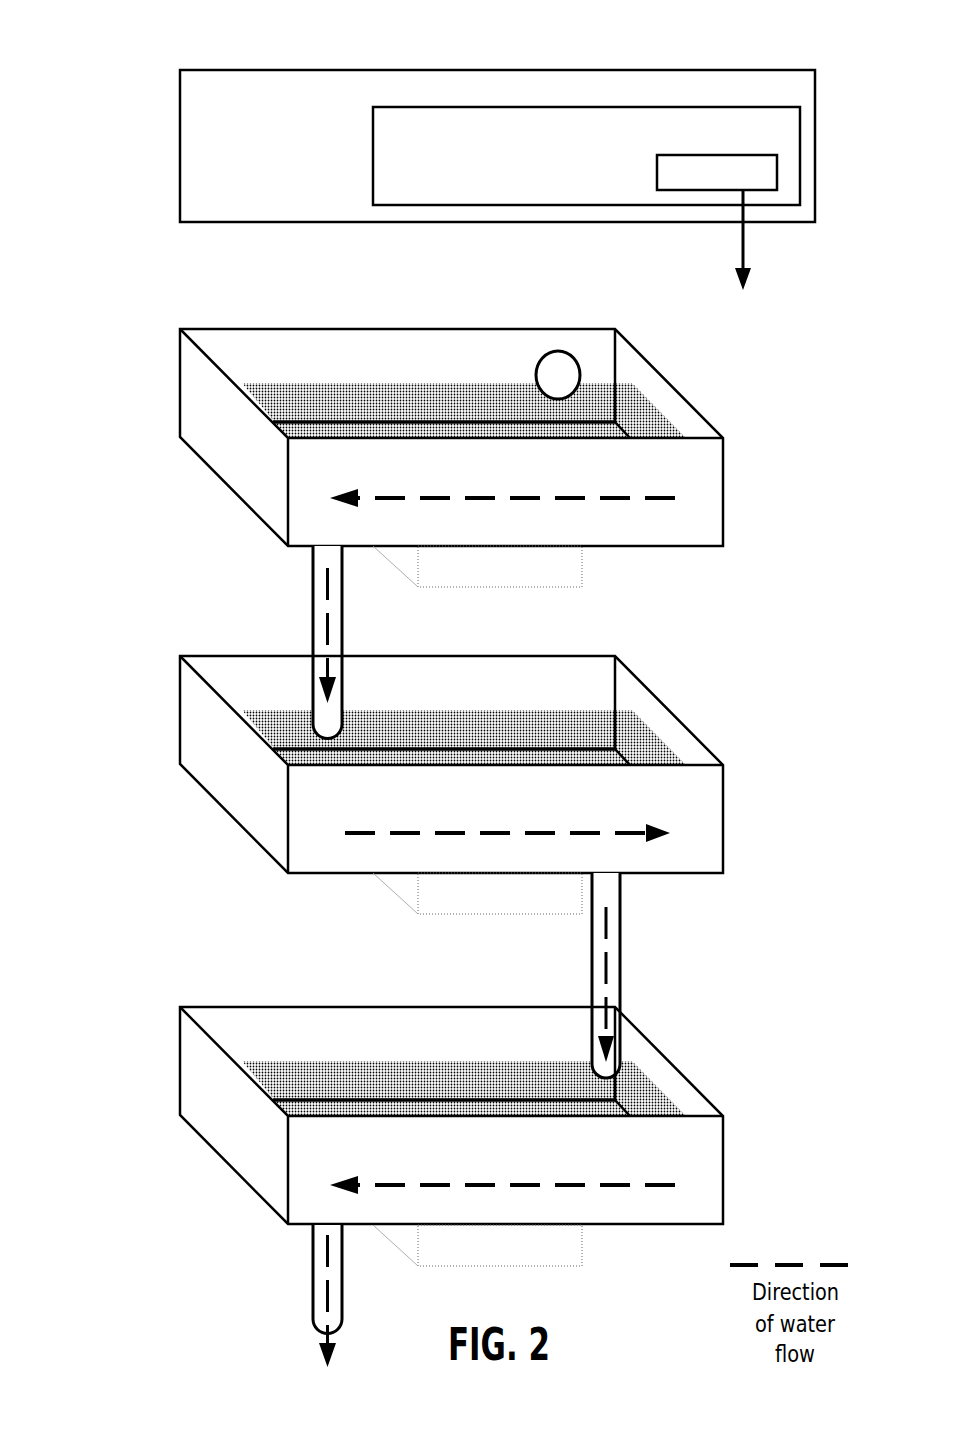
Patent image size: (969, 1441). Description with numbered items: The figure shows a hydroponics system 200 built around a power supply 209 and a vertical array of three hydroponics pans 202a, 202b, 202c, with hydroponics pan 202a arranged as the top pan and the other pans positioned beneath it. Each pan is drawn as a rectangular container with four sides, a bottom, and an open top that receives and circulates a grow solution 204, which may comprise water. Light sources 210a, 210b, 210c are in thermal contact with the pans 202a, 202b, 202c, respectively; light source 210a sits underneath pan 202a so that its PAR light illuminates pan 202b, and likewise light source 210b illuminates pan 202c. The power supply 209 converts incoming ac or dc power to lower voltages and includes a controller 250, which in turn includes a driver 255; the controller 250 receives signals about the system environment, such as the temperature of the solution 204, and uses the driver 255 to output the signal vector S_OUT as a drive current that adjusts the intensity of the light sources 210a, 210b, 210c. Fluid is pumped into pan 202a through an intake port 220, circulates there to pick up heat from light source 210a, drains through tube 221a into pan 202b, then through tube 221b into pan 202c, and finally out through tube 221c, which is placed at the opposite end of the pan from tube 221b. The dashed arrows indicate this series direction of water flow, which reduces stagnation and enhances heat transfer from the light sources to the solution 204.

The hydroponics system 200 is at (130, 36).
The power supply 209 is at (180, 170).
The controller 250 is at (373, 177).
The driver 255 is at (743, 155).
The solution 204 is at (333, 410).
The hydroponics pan 202a is at (398, 328).
The hydroponics pan 202b is at (397, 656).
The hydroponics pan 202c is at (397, 1007).
The intake port 220 is at (558, 352).
The light source 210a is at (440, 571).
The light source 210b is at (440, 906).
The light source 210c is at (440, 1258).
The tube 221a is at (313, 572).
The tube 221b is at (620, 942).
The tube 221c is at (313, 1268).